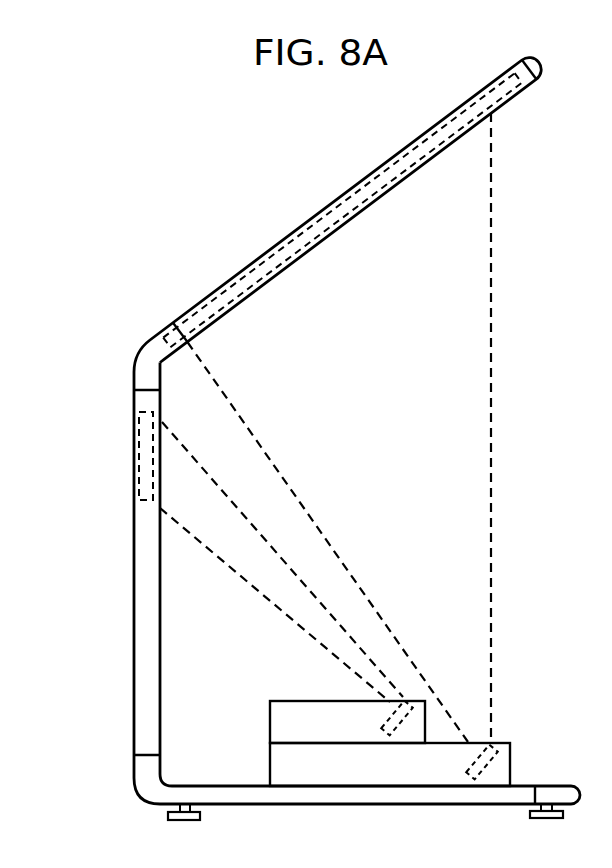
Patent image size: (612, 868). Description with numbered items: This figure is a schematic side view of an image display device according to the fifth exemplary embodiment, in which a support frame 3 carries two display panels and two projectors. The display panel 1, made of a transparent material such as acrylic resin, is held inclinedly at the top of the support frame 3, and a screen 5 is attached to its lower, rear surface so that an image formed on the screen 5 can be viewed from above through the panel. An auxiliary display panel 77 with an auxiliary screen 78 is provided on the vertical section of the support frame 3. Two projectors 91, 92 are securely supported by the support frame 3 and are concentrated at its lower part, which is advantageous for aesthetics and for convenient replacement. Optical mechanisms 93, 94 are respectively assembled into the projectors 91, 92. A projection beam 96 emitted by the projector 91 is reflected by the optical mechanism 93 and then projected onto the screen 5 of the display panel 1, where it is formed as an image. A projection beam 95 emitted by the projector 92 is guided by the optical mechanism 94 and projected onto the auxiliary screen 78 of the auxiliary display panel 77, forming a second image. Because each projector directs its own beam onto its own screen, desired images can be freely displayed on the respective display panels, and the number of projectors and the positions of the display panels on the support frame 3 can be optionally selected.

The display panel 1 is at (382, 165).
The support frame 3 is at (145, 543).
The screen 5 is at (324, 245).
The auxiliary display panel 77 is at (139, 440).
The auxiliary screen 78 is at (150, 456).
The projector 91 is at (285, 765).
The projector 92 is at (290, 720).
The optical mechanism 93 is at (482, 772).
The optical mechanism 94 is at (397, 728).
The projection beam 95 is at (219, 534).
The projection beam 96 is at (476, 323).